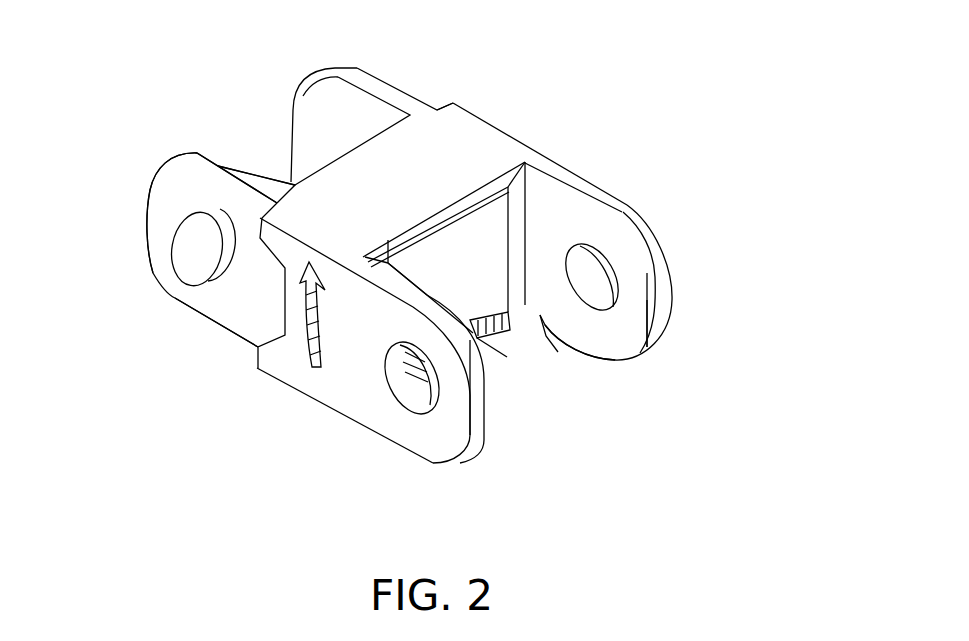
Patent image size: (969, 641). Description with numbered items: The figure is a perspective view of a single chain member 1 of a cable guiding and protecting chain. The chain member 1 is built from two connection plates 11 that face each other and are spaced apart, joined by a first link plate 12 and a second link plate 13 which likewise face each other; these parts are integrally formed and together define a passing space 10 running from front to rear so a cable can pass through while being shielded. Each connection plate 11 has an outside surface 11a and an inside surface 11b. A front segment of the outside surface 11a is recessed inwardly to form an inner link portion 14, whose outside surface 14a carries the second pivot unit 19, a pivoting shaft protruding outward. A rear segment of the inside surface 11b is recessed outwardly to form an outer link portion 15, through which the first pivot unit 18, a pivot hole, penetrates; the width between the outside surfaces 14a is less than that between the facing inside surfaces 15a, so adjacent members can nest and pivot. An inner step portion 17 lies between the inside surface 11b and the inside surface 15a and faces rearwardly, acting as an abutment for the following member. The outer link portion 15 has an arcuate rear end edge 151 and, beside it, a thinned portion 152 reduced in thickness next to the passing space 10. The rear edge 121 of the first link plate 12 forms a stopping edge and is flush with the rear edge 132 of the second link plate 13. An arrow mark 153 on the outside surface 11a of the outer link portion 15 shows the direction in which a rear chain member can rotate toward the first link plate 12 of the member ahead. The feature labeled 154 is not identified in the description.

The chain member 1 is at (273, 426).
The passing space 10 is at (496, 208).
The connection plate 11 is at (496, 118).
The outside surface of connection plate 11a is at (627, 187).
The inside surface of connection plate 11b is at (323, 112).
The first link plate 12 is at (387, 163).
The rear edge of first link plate 121 is at (451, 207).
The second link plate 13 is at (541, 328).
The rear edge of second link plate 132 is at (480, 335).
The inner link portion 14 is at (311, 71).
The outside surface of inner link portion 14a is at (353, 68).
The outer link portion 15 is at (664, 251).
The rear end edge 151 is at (672, 307).
The thinned portion 152 is at (670, 330).
The arrow mark 153 is at (327, 366).
The top surface 154 is at (360, 198).
The inside surface of outer link portion 15a is at (627, 333).
The inner step portion 17 is at (515, 242).
The first pivot unit 18 is at (420, 408).
The second pivot unit 19 is at (190, 248).